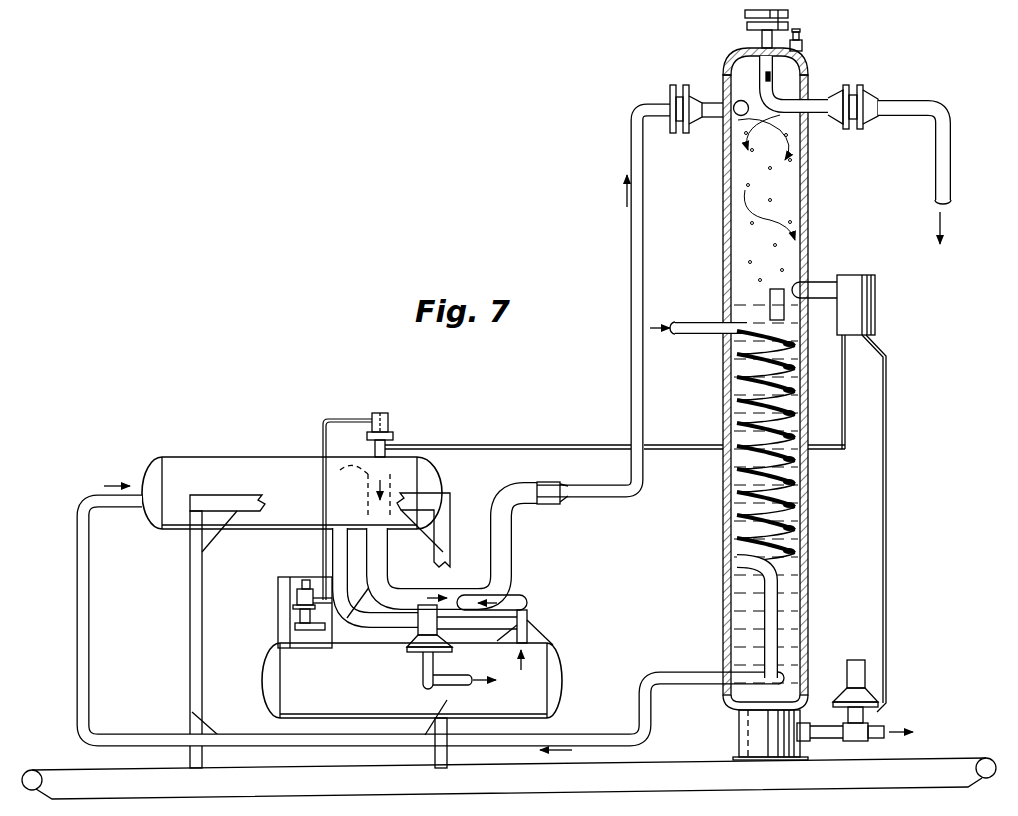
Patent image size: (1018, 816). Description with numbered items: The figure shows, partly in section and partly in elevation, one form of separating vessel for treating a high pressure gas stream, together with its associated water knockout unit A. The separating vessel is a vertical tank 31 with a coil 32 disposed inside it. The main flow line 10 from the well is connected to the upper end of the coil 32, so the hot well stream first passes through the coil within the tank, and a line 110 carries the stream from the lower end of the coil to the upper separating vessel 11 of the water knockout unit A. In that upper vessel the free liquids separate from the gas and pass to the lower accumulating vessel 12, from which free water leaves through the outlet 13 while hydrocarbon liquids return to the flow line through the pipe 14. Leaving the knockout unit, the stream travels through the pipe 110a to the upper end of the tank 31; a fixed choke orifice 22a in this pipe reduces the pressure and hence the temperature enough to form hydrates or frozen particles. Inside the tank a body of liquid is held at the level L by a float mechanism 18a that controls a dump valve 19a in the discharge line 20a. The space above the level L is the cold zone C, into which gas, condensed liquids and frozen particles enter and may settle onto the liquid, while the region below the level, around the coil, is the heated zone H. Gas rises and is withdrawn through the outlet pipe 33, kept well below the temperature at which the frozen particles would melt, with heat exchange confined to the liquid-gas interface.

The high pressure flow line 10 is at (705, 320).
The upper separating vessel 11 is at (229, 458).
The lower accumulating vessel 12 is at (277, 668).
The outlet 13 is at (470, 682).
The pipe 14 is at (528, 620).
The float mechanism 18a is at (829, 278).
The dump valve 19a is at (861, 657).
The discharge line 20a is at (886, 726).
The fixed choke orifice 22a is at (636, 102).
The vertical tank 31 is at (808, 222).
The coil 32 is at (764, 504).
The outlet pipe 33 is at (775, 80).
The line 110 is at (78, 540).
The pipe 110a is at (582, 500).
The water knockout unit A is at (300, 457).
The cold zone C is at (752, 170).
The heated zone H is at (736, 502).
The liquid level L is at (745, 297).